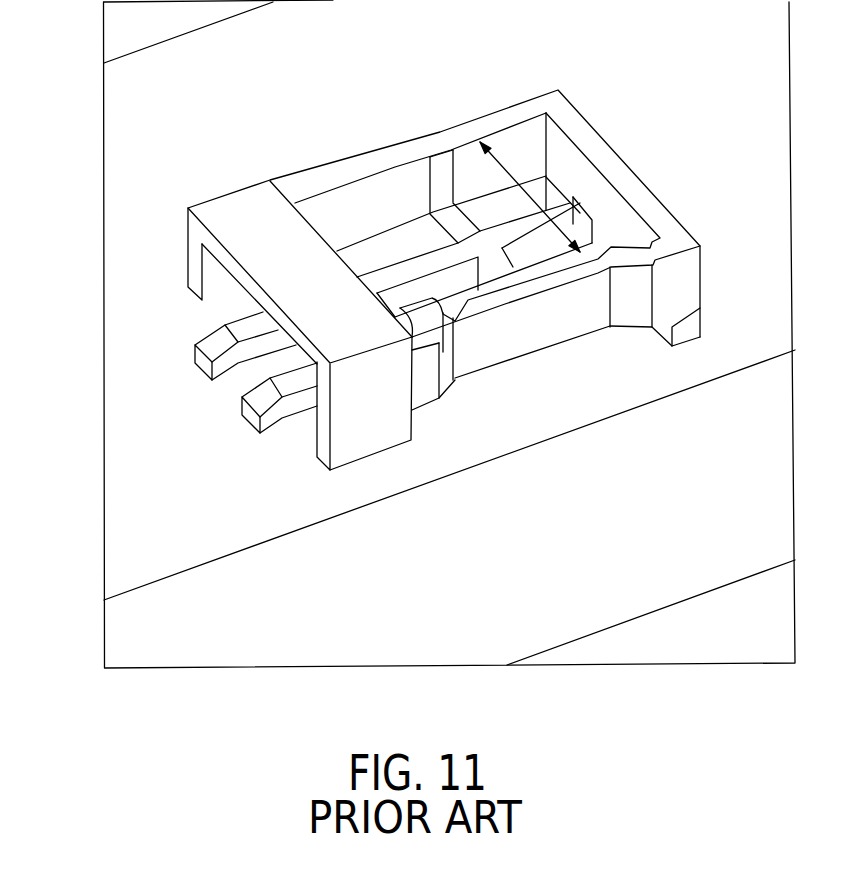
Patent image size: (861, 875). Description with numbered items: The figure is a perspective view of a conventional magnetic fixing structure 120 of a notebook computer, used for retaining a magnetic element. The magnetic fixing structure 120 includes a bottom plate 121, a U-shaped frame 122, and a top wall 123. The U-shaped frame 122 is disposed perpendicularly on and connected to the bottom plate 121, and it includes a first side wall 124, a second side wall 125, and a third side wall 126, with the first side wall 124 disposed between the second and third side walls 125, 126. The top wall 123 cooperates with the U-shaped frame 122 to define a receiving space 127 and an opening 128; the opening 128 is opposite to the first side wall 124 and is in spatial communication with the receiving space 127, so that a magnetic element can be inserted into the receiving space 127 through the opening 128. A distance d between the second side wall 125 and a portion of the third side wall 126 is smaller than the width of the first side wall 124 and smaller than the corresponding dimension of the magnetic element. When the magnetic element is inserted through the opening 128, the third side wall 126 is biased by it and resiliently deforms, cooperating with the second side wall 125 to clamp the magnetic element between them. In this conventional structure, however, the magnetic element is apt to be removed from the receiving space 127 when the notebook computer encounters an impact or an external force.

The magnetic fixing structure 120 is at (190, 187).
The bottom plate 121 is at (180, 540).
The U-shaped frame 122 is at (595, 118).
The top wall 123 is at (243, 220).
The first side wall 124 is at (632, 188).
The second side wall 125 is at (405, 147).
The third side wall 126 is at (535, 282).
The receiving space 127 is at (403, 270).
The opening 128 is at (230, 305).
The distance d is at (531, 185).